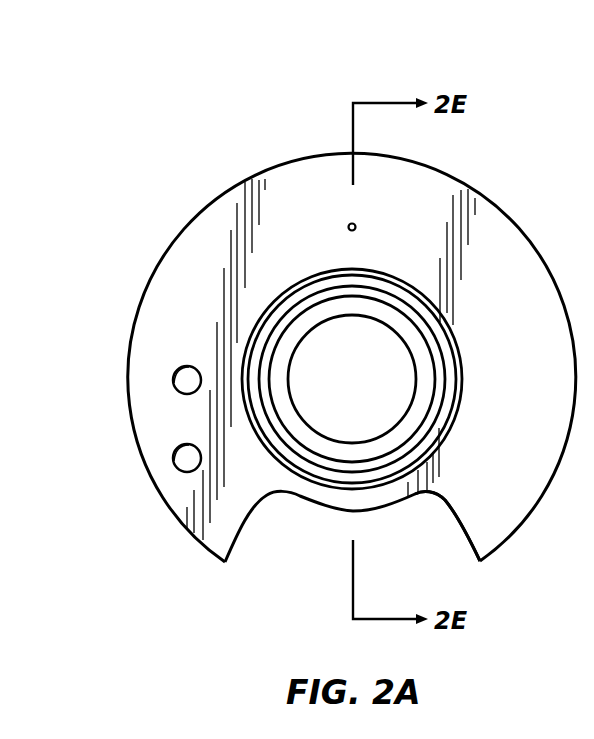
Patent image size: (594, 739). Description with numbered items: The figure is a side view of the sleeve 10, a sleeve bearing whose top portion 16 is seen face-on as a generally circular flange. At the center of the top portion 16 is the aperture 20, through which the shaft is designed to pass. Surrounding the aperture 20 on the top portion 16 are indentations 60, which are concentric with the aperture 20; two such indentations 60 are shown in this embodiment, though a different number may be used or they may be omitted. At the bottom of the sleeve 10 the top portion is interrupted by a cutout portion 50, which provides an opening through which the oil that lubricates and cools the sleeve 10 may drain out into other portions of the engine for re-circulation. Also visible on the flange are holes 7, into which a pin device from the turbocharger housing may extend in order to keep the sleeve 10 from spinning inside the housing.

The sleeve 10 is at (180, 186).
The hole 7 is at (173, 455).
The top portion 16 is at (536, 376).
The aperture 20 is at (395, 328).
The indentations 60 is at (398, 280).
The cutout portion 50 is at (457, 519).